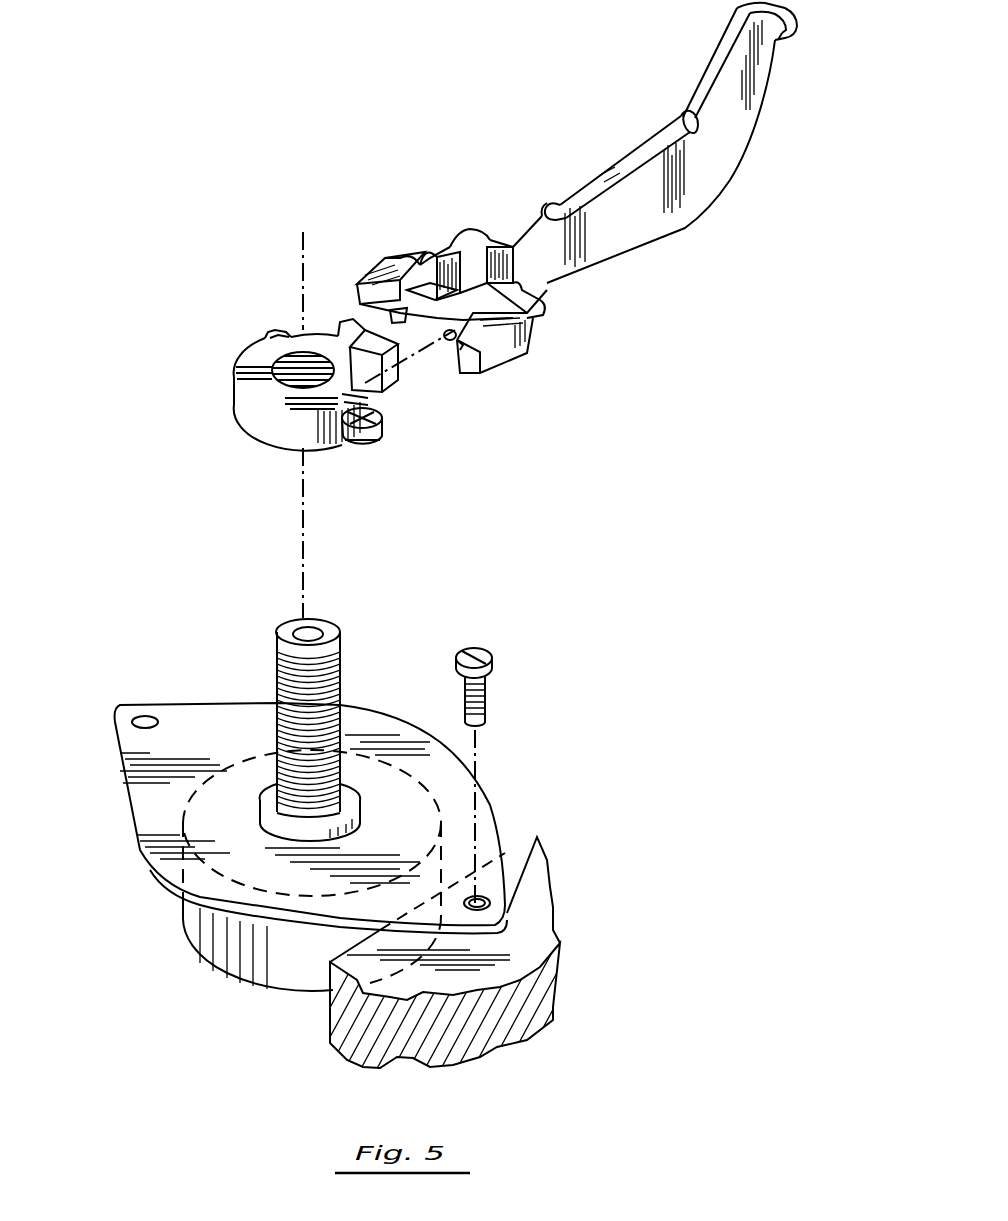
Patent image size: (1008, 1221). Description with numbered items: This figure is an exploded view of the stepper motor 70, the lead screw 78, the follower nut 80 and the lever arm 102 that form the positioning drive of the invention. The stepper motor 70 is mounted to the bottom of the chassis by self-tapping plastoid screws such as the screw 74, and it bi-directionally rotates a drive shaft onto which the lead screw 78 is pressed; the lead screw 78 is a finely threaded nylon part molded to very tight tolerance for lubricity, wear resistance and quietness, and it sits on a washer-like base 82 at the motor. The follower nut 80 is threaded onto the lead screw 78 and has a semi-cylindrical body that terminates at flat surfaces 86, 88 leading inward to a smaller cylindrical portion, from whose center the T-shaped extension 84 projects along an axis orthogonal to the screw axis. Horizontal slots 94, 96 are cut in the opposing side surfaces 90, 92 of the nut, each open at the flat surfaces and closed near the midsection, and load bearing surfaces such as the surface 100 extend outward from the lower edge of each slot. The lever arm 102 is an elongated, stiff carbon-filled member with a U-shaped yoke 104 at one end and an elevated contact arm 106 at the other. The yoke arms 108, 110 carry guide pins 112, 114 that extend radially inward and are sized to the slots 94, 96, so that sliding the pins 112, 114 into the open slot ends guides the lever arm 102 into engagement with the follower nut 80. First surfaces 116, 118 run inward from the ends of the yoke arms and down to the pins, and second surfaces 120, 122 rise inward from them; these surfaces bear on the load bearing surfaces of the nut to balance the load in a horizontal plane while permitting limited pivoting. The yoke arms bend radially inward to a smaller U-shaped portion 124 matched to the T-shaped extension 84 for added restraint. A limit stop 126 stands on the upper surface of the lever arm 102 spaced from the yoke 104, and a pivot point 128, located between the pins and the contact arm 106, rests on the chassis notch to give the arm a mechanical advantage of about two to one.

The stepper motor 70 is at (257, 983).
The self-tapping plastoid screw 74 is at (489, 693).
The lead screw 78 is at (345, 683).
The follower nut 80 is at (247, 413).
The washer 82 is at (363, 793).
The T-shaped extension 84 is at (349, 313).
The flat surface 86 is at (293, 327).
The flat surface 88 is at (372, 383).
The side surface 90 is at (303, 389).
The side surface 92 is at (370, 392).
The horizontal slot 94 is at (237, 365).
The horizontal slot 96 is at (367, 440).
The load bearing surface 100 is at (344, 442).
The lever arm 102 is at (640, 207).
The U-shaped yoke 104 is at (456, 226).
The contact arm 106 is at (788, 42).
The yoke arm 108 is at (390, 252).
The yoke arm 110 is at (507, 367).
The guide pin 112 is at (393, 290).
The guide pin 114 is at (450, 341).
The first surface 116 is at (385, 314).
The first surface 118 is at (457, 352).
The second surface 120 is at (424, 256).
The second surface 122 is at (527, 312).
The smaller U-shaped portion 124 is at (498, 242).
The limit stop 126 is at (548, 205).
The pivot point 128 is at (683, 120).